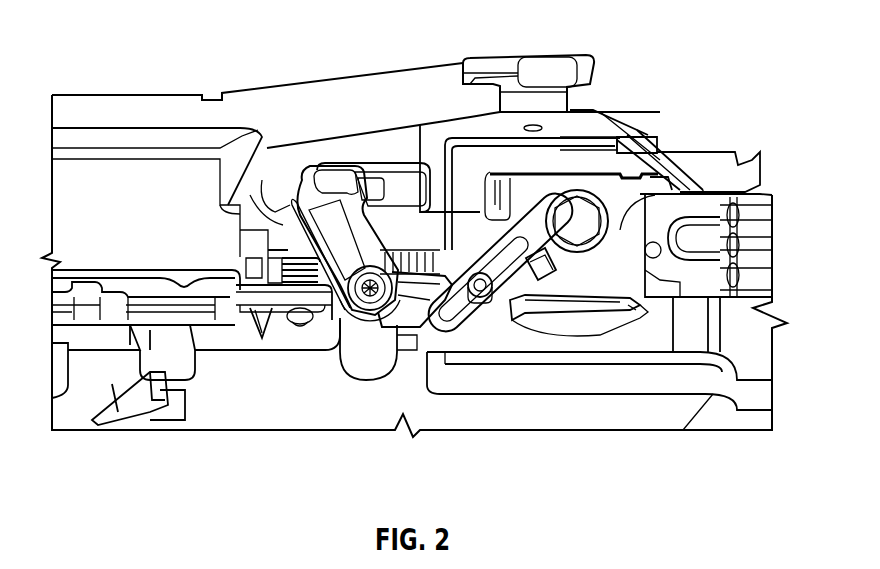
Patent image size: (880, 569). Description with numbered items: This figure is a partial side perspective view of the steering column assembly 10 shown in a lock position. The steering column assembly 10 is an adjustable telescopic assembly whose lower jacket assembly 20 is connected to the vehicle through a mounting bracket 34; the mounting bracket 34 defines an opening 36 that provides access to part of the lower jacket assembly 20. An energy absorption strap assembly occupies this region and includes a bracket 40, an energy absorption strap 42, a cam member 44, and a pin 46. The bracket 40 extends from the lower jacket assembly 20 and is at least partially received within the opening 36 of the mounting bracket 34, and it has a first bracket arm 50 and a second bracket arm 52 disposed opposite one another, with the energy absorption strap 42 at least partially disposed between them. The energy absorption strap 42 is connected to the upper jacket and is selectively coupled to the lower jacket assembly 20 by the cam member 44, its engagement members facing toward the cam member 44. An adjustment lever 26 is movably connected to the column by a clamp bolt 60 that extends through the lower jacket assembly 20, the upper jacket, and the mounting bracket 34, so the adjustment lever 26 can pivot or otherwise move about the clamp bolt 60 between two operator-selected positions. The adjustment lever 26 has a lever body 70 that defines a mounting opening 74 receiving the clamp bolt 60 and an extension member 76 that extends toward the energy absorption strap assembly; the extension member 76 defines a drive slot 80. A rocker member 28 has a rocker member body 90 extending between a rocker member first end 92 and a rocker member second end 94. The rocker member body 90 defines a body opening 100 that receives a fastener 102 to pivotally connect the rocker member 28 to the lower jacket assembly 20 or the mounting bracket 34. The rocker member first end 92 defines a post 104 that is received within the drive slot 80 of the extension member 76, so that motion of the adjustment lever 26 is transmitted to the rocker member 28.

The steering column assembly 10 is at (699, 69).
The lower jacket assembly 20 is at (237, 352).
The adjustment lever 26 is at (768, 196).
The rocker member 28 is at (371, 335).
The mounting bracket 34 is at (285, 105).
The opening 36 is at (503, 192).
The bracket 40 is at (273, 196).
The energy absorption strap 42 is at (150, 288).
The cam member 44 is at (273, 245).
The pin 46 is at (298, 328).
The first bracket arm 50 is at (285, 297).
The second bracket arm 52 is at (302, 192).
The clamp bolt 60 is at (583, 200).
The lever body 70 is at (623, 230).
The mounting opening 74 is at (550, 205).
The extension member 76 is at (527, 306).
The drive slot 80 is at (473, 318).
The rocker member body 90 is at (398, 275).
The rocker member first end 92 is at (434, 293).
The rocker member second end 94 is at (334, 190).
The body opening 100 is at (360, 330).
The fastener 102 is at (425, 325).
The post 104 is at (560, 268).